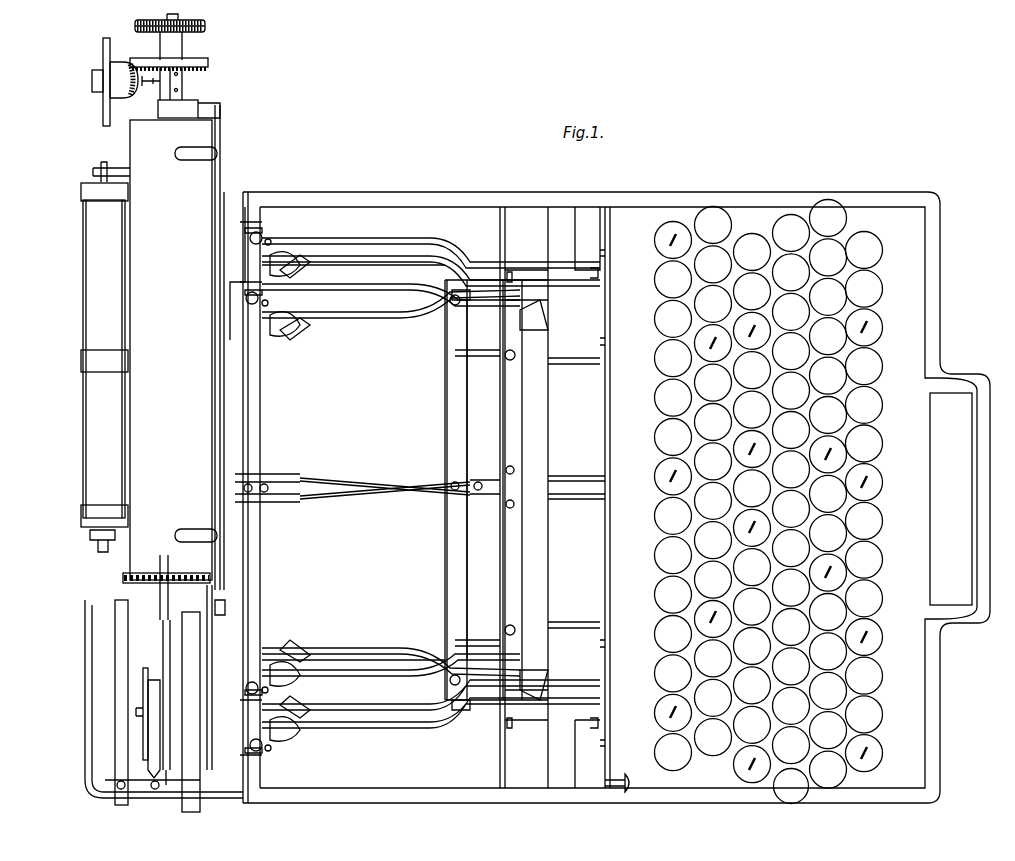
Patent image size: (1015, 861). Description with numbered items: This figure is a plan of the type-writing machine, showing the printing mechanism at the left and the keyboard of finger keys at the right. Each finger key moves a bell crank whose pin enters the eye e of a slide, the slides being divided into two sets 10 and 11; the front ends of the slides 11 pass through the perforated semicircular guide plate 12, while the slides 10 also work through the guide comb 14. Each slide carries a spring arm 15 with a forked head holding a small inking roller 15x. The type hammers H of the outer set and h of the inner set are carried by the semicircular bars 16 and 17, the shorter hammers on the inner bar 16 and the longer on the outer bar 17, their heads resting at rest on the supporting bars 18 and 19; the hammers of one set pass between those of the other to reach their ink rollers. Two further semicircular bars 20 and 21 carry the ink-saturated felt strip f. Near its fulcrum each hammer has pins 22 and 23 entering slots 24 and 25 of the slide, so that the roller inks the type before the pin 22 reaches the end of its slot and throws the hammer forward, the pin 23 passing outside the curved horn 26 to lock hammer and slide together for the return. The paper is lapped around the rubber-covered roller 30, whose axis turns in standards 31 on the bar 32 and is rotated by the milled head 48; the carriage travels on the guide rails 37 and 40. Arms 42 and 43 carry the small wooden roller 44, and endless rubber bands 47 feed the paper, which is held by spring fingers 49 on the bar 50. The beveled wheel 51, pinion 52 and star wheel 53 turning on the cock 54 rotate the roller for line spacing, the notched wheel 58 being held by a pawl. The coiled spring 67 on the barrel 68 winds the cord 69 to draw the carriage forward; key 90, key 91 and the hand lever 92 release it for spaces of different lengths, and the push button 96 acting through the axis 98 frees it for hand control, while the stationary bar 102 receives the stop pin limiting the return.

The slide 10 is at (616, 497).
The slide 11 is at (433, 494).
The semicircular guide plate 12 is at (605, 420).
The guide comb 14 is at (515, 272).
The spring arm 15 is at (501, 483).
The inking roller 15x is at (456, 490).
The inner semicircular bar 16 is at (280, 335).
The outer semicircular bar 17 is at (280, 270).
The supporting bar 18 is at (456, 490).
The supporting bar 19 is at (514, 490).
The semicircular bar 20 is at (470, 296).
The semicircular bar 21 is at (536, 335).
The pin 22 is at (300, 240).
The pin 23 is at (270, 240).
The slot 24 is at (250, 240).
The slot 25 is at (258, 228).
The curved horn 26 is at (242, 222).
The paper roller 30 is at (171, 350).
The standard 31 is at (182, 45).
The bar 32 is at (182, 102).
The guide rail 37 is at (164, 702).
The guide rail 40 is at (192, 712).
The arm 42 is at (98, 545).
The arm 43 is at (120, 168).
The small wooden roller 44 is at (104, 359).
The india rubber band 47 is at (104, 355).
The milled head 48 is at (205, 22).
The spring finger 49 is at (196, 344).
The bar 50 is at (224, 182).
The beveled toothed wheel 51 is at (208, 66).
The beveled pinion 52 is at (128, 98).
The star wheel 53 is at (103, 54).
The cock 54 is at (155, 87).
The notched wheel 58 is at (166, 586).
The coiled spring 67 is at (158, 734).
The barrel 68 is at (136, 714).
The cord 69 is at (163, 645).
The finger key 90 is at (791, 786).
The finger key 91 is at (769, 494).
The hand lever 92 is at (951, 499).
The push button 96 is at (627, 778).
The horizontal axis 98 is at (214, 677).
The stationary bar 102 is at (225, 612).
The eye e is at (597, 499).
The felt strip f is at (501, 480).
The hammer of the inner set h is at (377, 498).
The hammer of the outer set H is at (391, 474).